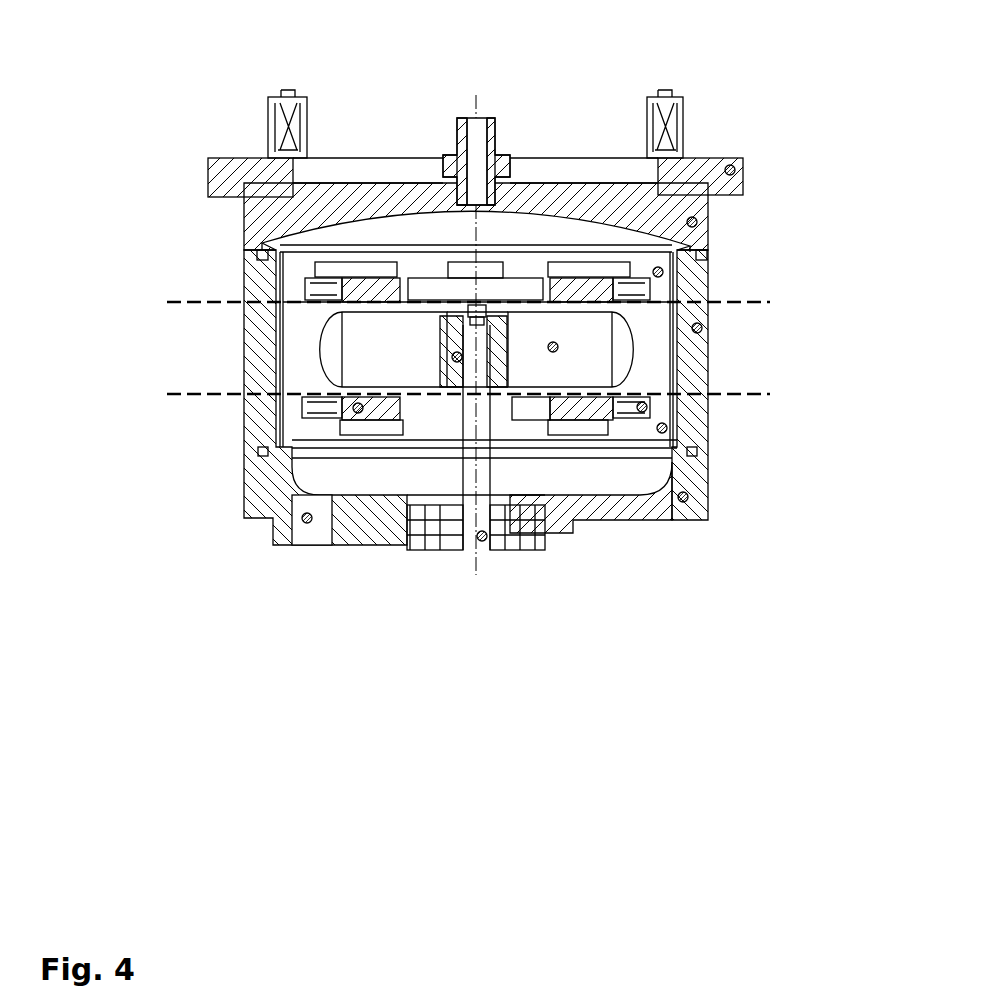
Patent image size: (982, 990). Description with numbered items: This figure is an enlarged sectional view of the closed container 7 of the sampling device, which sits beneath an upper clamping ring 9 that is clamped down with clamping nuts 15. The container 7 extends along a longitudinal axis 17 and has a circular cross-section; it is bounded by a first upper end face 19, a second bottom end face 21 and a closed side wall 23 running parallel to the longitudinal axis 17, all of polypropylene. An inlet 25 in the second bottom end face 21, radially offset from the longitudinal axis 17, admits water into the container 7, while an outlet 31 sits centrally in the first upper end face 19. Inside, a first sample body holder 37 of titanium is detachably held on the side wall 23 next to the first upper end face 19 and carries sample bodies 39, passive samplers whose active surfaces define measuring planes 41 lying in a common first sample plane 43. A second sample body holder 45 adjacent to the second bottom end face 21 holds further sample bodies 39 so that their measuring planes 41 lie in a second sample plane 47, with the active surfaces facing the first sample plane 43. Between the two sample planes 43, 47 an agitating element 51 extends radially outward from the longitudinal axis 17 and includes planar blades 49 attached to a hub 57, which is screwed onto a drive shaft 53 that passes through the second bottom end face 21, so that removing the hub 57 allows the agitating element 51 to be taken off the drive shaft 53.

The closed container 7 is at (227, 230).
The upper clamping ring 9 is at (731, 170).
The clamping nuts 15 is at (307, 97).
The longitudinal axis 17 is at (490, 115).
The first upper end face 19 is at (697, 220).
The second bottom end face 21 is at (686, 500).
The side wall 23 is at (697, 327).
The inlet 25 is at (307, 518).
The outlet 31 is at (478, 198).
The first sample body holder 37 is at (701, 252).
The sample bodies 39 is at (520, 273).
The measuring plane 41 is at (357, 390).
The first sample plane 43 is at (222, 300).
The second sample body holder 45 is at (665, 428).
The second sample plane 47 is at (220, 397).
The blades 49 is at (554, 348).
The agitating element 51 is at (648, 347).
The drive shaft 53 is at (483, 537).
The hub 57 is at (458, 358).